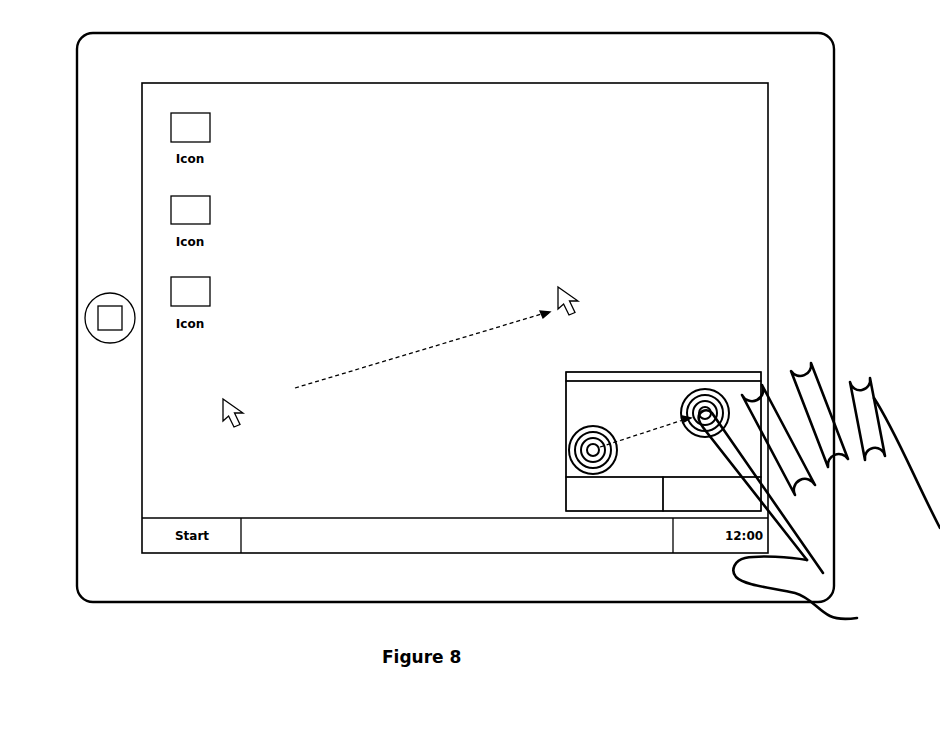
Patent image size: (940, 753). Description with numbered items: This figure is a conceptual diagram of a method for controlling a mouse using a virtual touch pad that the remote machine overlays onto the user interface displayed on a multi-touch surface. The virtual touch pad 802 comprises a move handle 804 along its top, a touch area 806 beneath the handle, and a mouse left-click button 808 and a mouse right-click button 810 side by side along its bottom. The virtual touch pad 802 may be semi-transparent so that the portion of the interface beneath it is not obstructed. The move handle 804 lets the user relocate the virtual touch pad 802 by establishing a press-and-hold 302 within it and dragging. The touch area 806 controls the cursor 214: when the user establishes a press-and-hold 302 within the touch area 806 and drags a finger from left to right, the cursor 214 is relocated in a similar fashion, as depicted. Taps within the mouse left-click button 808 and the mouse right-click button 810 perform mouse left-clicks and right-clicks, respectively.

The cursor 214 is at (240, 412).
The press-and-hold 302 is at (682, 414).
The virtual touch pad 802 is at (582, 372).
The move handle 804 is at (623, 377).
The touch area 806 is at (655, 396).
The mouse left-click button 808 is at (585, 499).
The mouse right-click button 810 is at (683, 500).